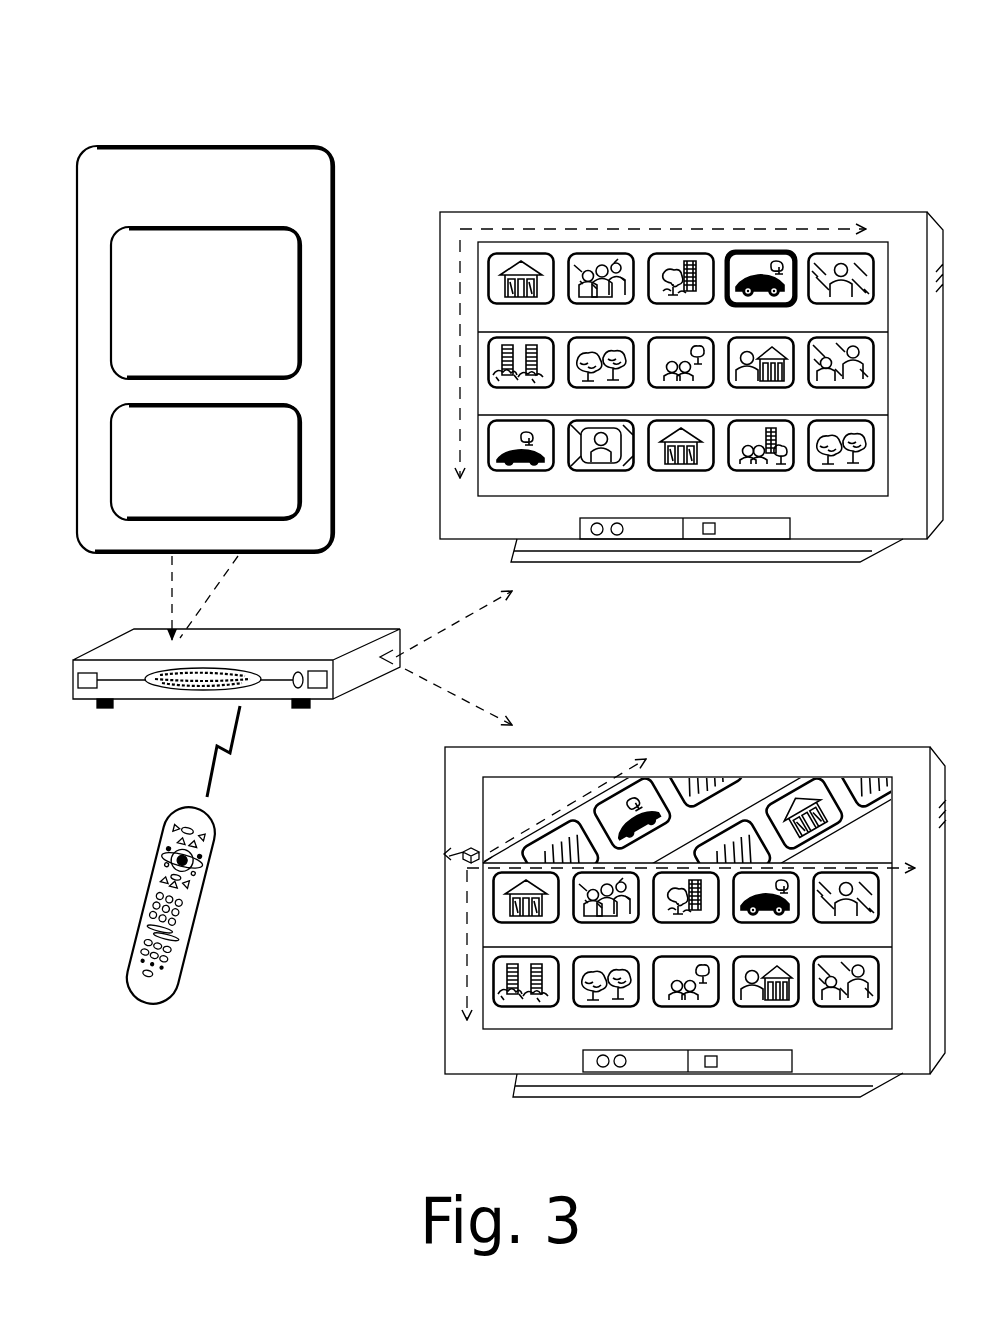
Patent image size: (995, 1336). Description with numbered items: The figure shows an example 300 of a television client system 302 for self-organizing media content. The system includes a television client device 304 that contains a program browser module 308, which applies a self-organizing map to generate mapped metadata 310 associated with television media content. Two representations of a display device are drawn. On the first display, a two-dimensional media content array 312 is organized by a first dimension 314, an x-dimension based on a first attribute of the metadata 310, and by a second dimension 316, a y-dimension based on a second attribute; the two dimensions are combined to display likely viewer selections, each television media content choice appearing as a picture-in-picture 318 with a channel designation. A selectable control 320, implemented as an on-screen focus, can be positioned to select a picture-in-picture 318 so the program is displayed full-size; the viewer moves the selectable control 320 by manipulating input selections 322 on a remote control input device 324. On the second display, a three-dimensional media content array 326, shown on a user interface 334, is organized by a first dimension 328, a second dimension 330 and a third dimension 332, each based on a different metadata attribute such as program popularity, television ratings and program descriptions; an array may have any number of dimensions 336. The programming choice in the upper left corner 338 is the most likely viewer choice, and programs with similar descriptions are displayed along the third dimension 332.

The example 300 is at (753, 66).
The television client system 302 is at (168, 742).
The television client device 304 is at (292, 435).
The program browser module 308 is at (206, 303).
The mapped metadata 310 is at (206, 462).
The media content array 312 is at (641, 258).
The first dimension 314 is at (500, 228).
The second dimension 316 is at (460, 292).
The picture-in-picture 318 is at (787, 462).
The selectable control 320 is at (746, 252).
The input selections 322 is at (208, 885).
The remote control input device 324 is at (191, 946).
The media content array 326 is at (770, 782).
The first dimension 328 is at (483, 862).
The second dimension 330 is at (490, 892).
The third dimension 332 is at (500, 840).
The user interface 334 is at (563, 776).
The dimensions 336 is at (465, 871).
The upper left corner 338 is at (490, 956).